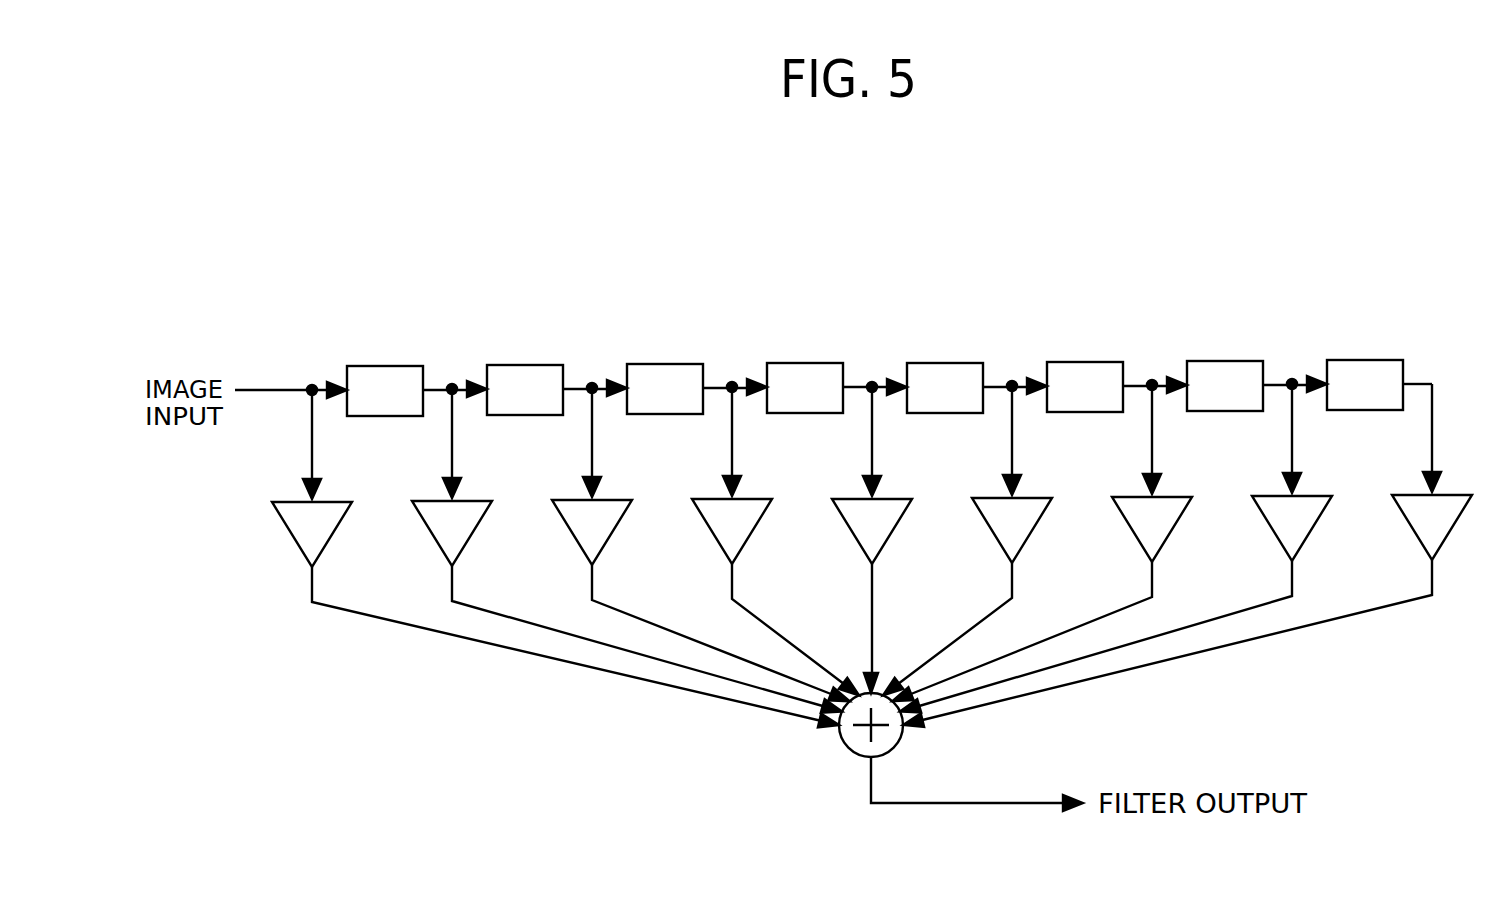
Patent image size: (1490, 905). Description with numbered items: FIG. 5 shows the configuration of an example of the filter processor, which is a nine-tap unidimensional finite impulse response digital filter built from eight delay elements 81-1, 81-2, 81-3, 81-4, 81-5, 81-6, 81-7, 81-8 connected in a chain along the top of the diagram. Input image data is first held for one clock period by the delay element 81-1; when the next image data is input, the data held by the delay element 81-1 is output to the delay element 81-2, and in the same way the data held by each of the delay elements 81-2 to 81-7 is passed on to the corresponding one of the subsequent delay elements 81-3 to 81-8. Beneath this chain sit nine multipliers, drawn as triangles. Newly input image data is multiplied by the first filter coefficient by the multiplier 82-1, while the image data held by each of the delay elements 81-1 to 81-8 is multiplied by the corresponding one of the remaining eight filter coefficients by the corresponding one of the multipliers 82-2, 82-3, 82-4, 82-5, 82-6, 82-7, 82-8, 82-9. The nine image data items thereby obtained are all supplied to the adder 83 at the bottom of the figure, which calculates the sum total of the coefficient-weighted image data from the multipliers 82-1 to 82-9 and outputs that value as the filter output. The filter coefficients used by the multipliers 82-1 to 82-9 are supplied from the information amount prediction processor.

The delay element 81-1 is at (387, 366).
The delay element 81-2 is at (527, 365).
The delay element 81-3 is at (667, 364).
The delay element 81-4 is at (807, 363).
The delay element 81-5 is at (947, 363).
The delay element 81-6 is at (1087, 362).
The delay element 81-7 is at (1227, 361).
The delay element 81-8 is at (1367, 360).
The multiplier 82-1 is at (292, 535).
The multiplier 82-2 is at (432, 534).
The multiplier 82-3 is at (572, 533).
The multiplier 82-4 is at (712, 532).
The multiplier 82-5 is at (852, 532).
The multiplier 82-6 is at (992, 531).
The multiplier 82-7 is at (1132, 530).
The multiplier 82-8 is at (1272, 529).
The multiplier 82-9 is at (1412, 528).
The adder 83 is at (846, 749).